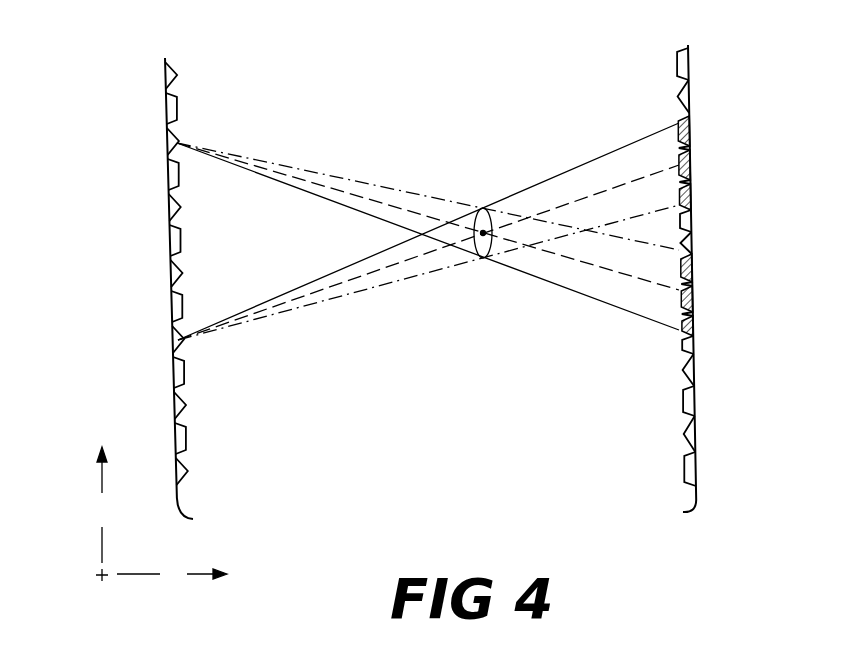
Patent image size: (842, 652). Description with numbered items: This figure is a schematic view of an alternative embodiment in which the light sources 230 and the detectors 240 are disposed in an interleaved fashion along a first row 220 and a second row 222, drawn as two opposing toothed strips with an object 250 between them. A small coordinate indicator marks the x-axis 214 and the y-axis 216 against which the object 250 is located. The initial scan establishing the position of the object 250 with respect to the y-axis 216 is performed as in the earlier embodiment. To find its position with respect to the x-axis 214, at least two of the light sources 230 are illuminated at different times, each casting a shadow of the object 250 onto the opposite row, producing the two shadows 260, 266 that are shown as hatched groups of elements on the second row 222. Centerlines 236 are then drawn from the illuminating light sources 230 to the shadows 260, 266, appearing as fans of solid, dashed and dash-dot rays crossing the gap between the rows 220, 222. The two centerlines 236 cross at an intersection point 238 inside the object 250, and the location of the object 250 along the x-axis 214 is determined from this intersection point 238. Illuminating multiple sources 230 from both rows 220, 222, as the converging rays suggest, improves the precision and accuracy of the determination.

The x-axis 214 is at (128, 577).
The y-axis 216 is at (101, 553).
The first row 220 is at (205, 297).
The second row 222 is at (664, 287).
The light sources 230 is at (172, 73).
The detectors 240 is at (172, 108).
The centerlines 236 is at (592, 195).
The intersection point 238 is at (490, 256).
The object 250 is at (485, 212).
The shadow 260 is at (697, 118).
The shadow 266 is at (699, 255).